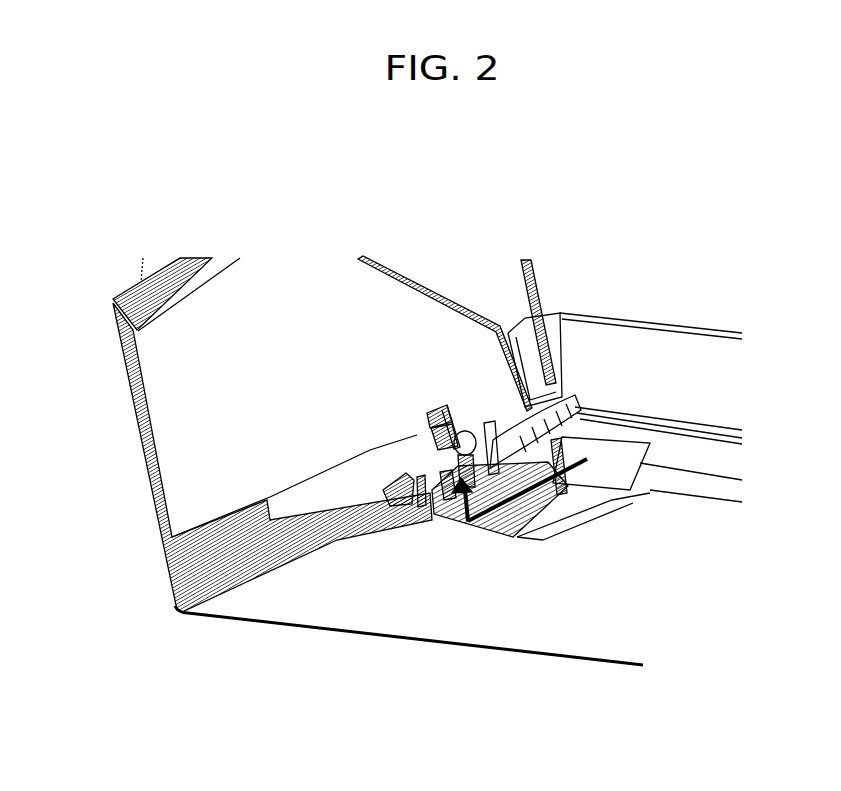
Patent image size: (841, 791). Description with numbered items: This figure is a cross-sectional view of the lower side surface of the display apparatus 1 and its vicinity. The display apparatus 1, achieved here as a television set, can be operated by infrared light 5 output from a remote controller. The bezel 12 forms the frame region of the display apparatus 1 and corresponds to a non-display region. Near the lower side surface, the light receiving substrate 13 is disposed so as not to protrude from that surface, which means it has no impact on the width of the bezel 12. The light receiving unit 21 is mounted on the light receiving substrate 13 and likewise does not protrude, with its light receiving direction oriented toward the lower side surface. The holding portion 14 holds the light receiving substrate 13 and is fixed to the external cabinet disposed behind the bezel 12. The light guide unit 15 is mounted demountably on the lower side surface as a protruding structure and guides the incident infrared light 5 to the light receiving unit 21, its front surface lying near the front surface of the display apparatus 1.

The display apparatus 1 is at (656, 228).
The infrared light 5 is at (474, 528).
The bezel 12 is at (729, 381).
The light receiving substrate 13 is at (413, 435).
The holding portion 14 is at (383, 489).
The light guide unit 15 is at (612, 500).
The light receiving unit 21 is at (472, 455).